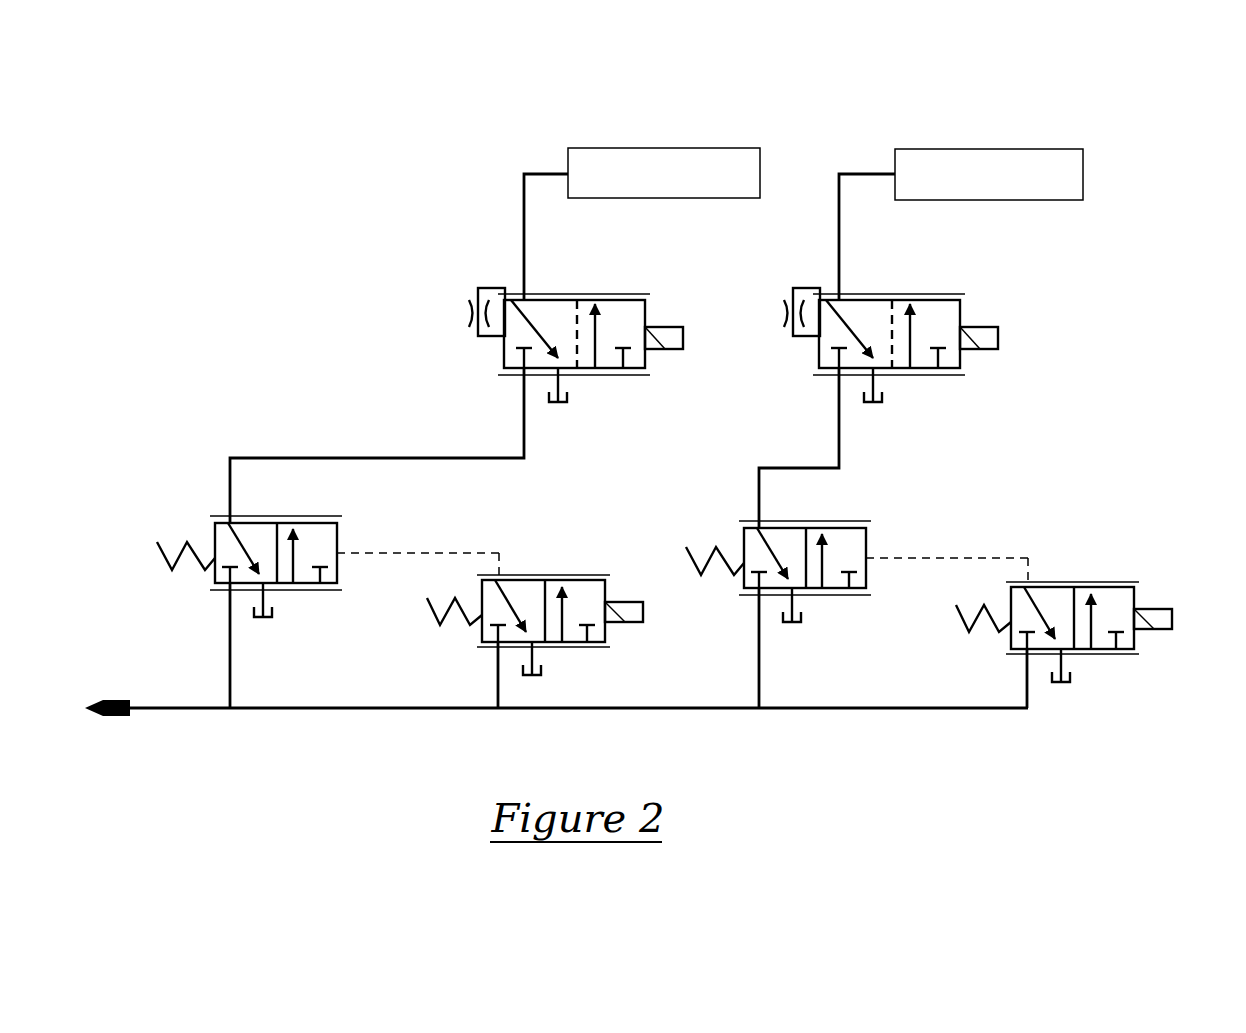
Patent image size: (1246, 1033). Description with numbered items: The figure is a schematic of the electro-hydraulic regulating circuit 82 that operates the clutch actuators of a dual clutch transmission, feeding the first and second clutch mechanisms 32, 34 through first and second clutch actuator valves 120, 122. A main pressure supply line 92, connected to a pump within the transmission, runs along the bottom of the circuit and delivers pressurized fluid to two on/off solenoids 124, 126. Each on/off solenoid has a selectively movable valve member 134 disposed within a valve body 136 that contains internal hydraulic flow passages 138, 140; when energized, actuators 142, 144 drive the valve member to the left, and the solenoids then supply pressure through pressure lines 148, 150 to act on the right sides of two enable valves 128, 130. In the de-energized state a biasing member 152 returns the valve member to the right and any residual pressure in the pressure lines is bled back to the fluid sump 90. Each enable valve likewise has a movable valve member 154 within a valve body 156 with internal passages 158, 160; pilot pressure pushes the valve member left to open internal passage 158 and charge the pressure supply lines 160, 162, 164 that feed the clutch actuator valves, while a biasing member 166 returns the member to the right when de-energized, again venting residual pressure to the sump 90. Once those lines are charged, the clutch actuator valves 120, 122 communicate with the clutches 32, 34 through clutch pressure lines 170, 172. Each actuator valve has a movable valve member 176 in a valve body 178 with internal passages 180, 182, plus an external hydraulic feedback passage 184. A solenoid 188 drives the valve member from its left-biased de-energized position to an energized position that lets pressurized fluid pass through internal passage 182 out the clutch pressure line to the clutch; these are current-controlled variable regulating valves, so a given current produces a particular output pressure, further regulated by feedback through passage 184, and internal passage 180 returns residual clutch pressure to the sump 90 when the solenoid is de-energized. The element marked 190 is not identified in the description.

The regulating circuit 82 is at (445, 158).
The first clutch mechanism 32 is at (708, 145).
The second clutch mechanism 34 is at (1037, 139).
The fluid sump 90 is at (572, 402).
The main pressure supply line 92 is at (690, 712).
The first clutch actuator valve 120 is at (596, 382).
The second clutch actuator valve 122 is at (922, 385).
The first on/off solenoid 124 is at (605, 656).
The second on/off solenoid 126 is at (1134, 663).
The first enable valve 128 is at (305, 596).
The second enable valve 130 is at (835, 601).
The valve member 134 is at (585, 587).
The valve body 136 is at (538, 574).
The internal hydraulic flow passage 138 is at (505, 603).
The internal hydraulic flow passage 140 is at (568, 608).
The actuator 142 is at (612, 624).
The actuator 144 is at (1142, 631).
The pressure line 148 is at (435, 552).
The pressure line 150 is at (966, 557).
The biasing member 152 is at (425, 645).
The valve member 154 is at (325, 530).
The valve body 156 is at (250, 515).
The internal hydraulic flow passage 158 is at (240, 545).
The pressure supply line 160 is at (296, 553).
The pressure supply line 162 is at (476, 457).
The pressure supply line 164 is at (813, 466).
The biasing member 166 is at (190, 542).
The clutch pressure line 170 is at (530, 244).
The clutch pressure line 172 is at (845, 244).
The valve member 176 is at (632, 316).
The valve body 178 is at (633, 293).
The internal hydraulic flow passage 180 is at (547, 322).
The internal hydraulic flow passage 182 is at (606, 325).
The external hydraulic feedback passage 184 is at (500, 290).
The solenoid 188 is at (658, 350).
The pressure damper 190 is at (468, 310).